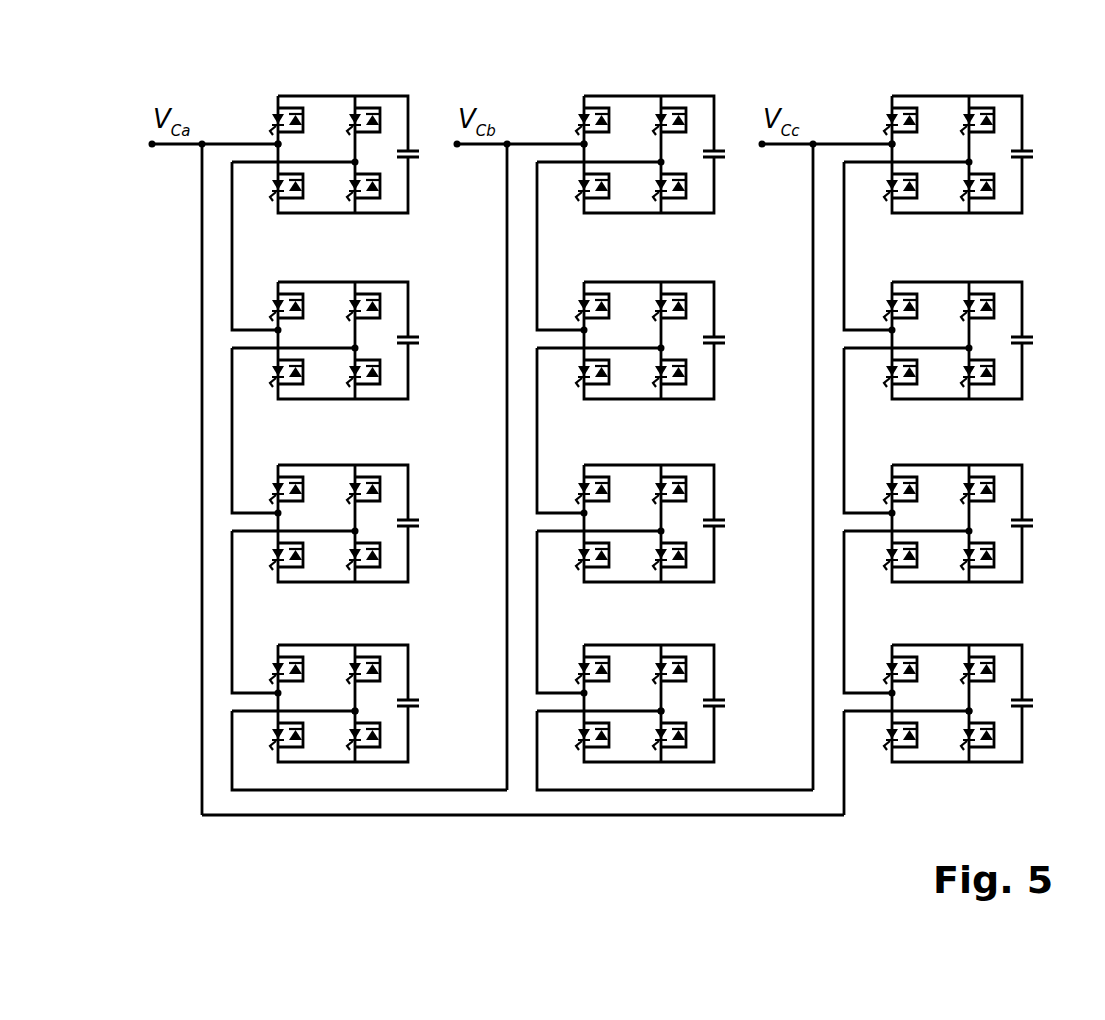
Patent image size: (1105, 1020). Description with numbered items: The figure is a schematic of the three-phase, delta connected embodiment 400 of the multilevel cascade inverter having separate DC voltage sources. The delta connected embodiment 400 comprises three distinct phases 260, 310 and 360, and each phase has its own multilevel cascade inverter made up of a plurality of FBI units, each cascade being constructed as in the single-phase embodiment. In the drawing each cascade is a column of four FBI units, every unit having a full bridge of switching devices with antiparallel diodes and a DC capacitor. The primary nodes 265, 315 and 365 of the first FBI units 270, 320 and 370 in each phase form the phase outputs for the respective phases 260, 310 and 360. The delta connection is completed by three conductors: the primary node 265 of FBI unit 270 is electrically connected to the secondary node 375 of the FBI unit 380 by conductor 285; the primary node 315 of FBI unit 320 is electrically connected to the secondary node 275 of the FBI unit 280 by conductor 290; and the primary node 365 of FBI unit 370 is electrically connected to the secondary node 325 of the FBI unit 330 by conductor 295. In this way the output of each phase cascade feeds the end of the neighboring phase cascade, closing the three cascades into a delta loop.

The phase 260 is at (240, 141).
The primary node 265 is at (280, 144).
The first FBI unit 270 is at (322, 96).
The secondary node 275 is at (355, 711).
The FBI unit 280 is at (318, 645).
The conductor 285 is at (200, 497).
The conductor 290 is at (507, 510).
The conductor 295 is at (813, 550).
The phase 310 is at (545, 141).
The primary node 315 is at (586, 144).
The first FBI unit 320 is at (628, 95).
The secondary node 325 is at (661, 710).
The FBI unit 330 is at (622, 645).
The phase 360 is at (852, 141).
The primary node 365 is at (894, 144).
The first FBI unit 370 is at (935, 95).
The secondary node 375 is at (969, 709).
The FBI unit 380 is at (928, 645).
The delta connected embodiment 400 is at (372, 827).